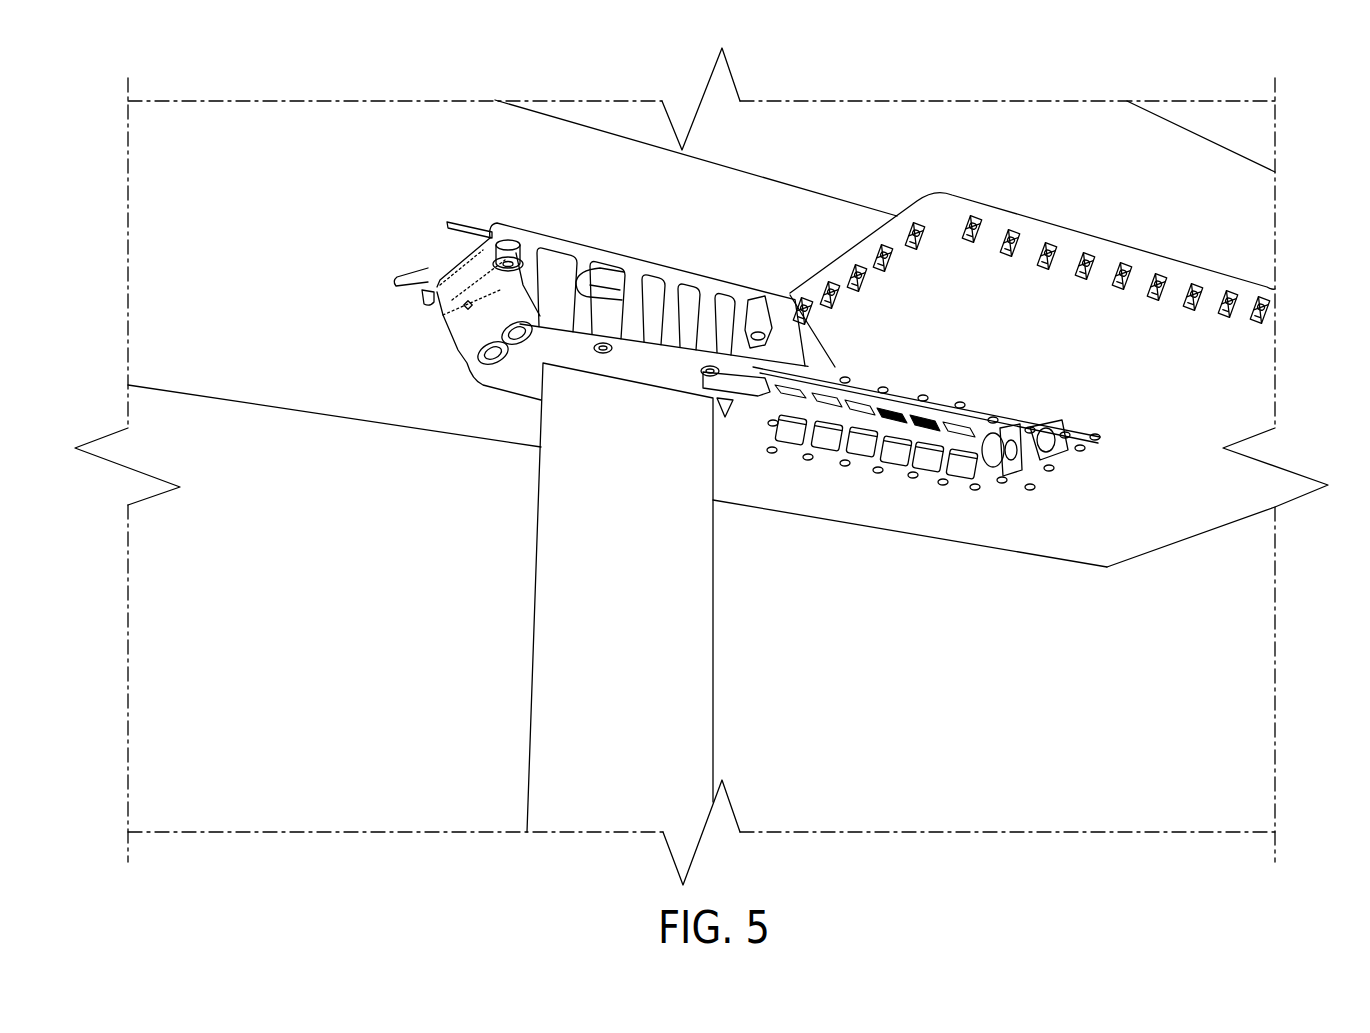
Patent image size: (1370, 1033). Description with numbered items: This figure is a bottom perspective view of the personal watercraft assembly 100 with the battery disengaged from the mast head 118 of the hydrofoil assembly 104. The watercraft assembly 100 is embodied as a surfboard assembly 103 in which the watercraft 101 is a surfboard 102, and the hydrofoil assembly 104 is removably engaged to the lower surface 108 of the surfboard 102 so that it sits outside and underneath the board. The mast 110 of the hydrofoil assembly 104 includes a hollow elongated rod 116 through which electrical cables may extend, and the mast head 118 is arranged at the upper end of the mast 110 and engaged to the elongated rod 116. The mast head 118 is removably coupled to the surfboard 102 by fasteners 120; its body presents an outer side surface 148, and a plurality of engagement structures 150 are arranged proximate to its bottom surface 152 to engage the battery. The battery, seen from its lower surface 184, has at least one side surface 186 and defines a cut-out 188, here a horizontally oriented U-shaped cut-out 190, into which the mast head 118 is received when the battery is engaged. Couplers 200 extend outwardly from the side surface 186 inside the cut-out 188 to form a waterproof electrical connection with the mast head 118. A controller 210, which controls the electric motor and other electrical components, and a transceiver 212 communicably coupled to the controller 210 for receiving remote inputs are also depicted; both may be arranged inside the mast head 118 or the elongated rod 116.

The personal watercraft assembly 100 is at (1198, 116).
The watercraft 101 is at (320, 380).
The surfboard 102 is at (250, 365).
The surfboard assembly 103 is at (1240, 126).
The hydrofoil assembly 104 is at (738, 740).
The lower surface 108 is at (294, 231).
The mast 110 is at (748, 678).
The elongated rod 116 is at (568, 683).
The mast head 118 is at (446, 328).
The fasteners 120 is at (462, 258).
The outer side surface 148 is at (630, 275).
The engagement structures 150 is at (730, 393).
The bottom surface 152 is at (635, 363).
The lower surface 184 is at (1162, 493).
The side surface 186 is at (1177, 333).
The cut-out 188 is at (922, 412).
The U-shaped cut-out 190 is at (885, 405).
The couplers 200 is at (1020, 475).
The controller 210 is at (404, 277).
The transceiver 212 is at (519, 240).